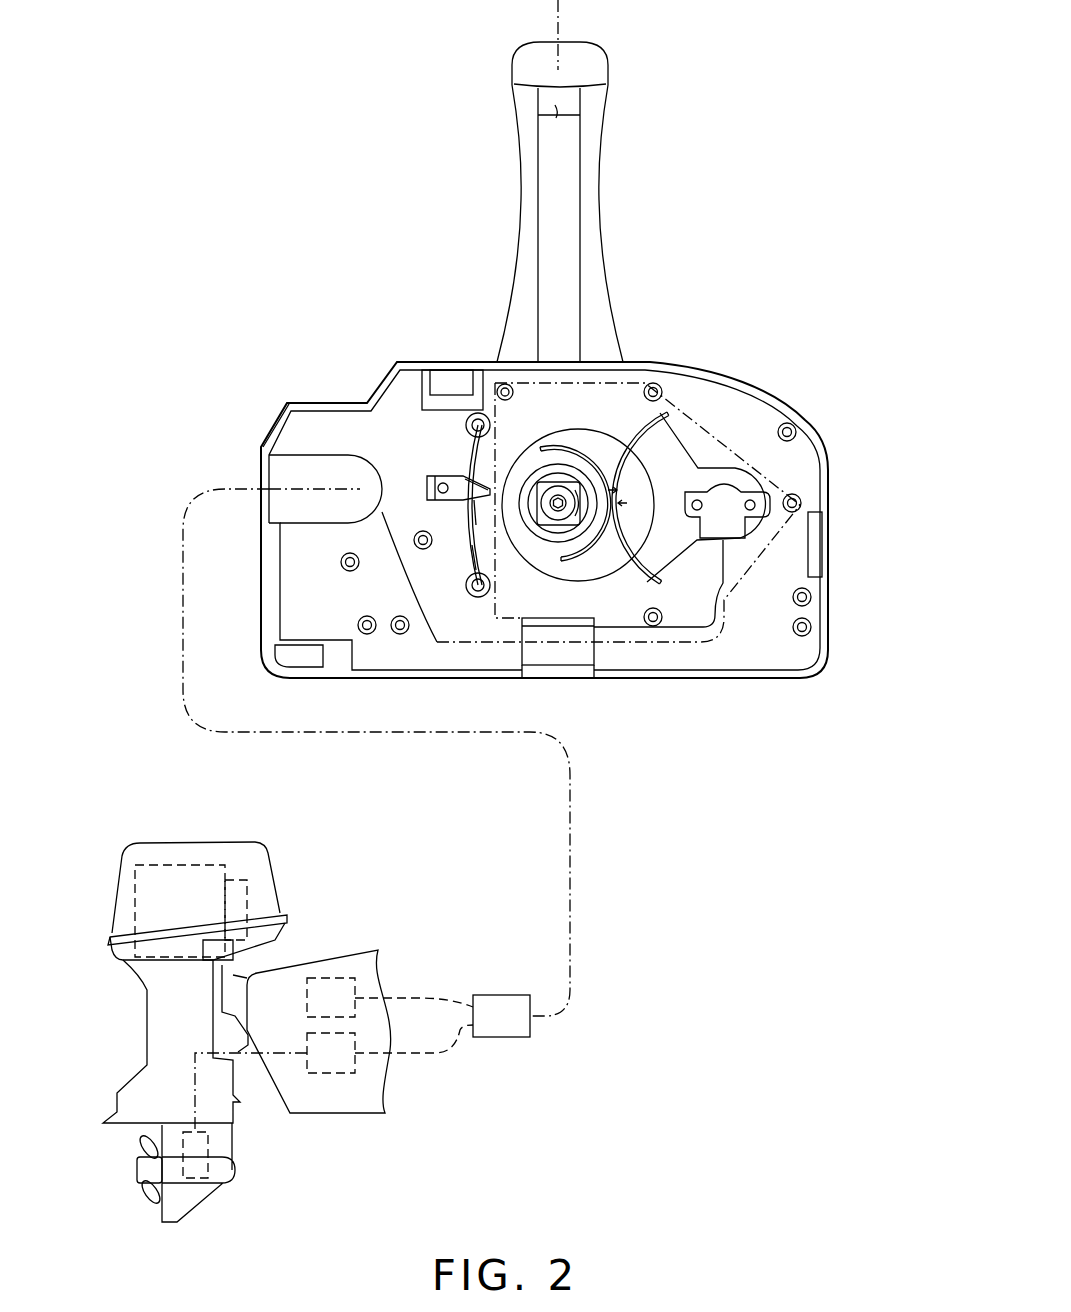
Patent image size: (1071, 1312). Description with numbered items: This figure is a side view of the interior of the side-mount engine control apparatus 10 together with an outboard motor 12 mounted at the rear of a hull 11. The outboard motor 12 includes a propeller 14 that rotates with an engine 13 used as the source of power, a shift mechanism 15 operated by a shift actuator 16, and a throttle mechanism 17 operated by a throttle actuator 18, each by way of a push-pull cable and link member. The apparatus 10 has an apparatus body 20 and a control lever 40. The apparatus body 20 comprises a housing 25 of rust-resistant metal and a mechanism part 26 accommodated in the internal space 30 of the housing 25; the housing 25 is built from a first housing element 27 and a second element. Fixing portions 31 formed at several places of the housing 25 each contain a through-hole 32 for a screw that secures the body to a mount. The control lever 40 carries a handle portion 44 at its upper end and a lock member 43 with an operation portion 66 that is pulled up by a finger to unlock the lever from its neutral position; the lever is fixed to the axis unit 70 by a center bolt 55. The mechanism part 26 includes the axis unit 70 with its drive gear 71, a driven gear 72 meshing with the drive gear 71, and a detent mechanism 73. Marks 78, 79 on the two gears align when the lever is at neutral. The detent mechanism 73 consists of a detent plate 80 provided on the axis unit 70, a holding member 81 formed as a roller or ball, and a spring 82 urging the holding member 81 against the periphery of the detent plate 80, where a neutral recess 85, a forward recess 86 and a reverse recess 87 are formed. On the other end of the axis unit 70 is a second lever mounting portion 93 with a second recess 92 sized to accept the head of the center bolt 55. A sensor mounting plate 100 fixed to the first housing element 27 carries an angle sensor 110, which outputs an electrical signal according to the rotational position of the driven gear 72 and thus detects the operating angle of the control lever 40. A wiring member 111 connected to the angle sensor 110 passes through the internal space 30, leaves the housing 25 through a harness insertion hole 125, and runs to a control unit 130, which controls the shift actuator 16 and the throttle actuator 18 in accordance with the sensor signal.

The engine control apparatus 10 is at (792, 292).
The hull 11 is at (370, 948).
The outboard motor 12 is at (258, 838).
The engine 13 is at (172, 870).
The propeller 14 is at (140, 1194).
The shift mechanism 15 is at (200, 1185).
The shift actuator 16 is at (323, 1072).
The throttle mechanism 17 is at (250, 888).
The throttle actuator 18 is at (330, 978).
The apparatus body 20 is at (330, 395).
The housing 25 is at (828, 478).
The mechanism part 26 is at (622, 648).
The first housing element 27 is at (266, 432).
The internal space 30 is at (735, 632).
The fixing portion 31 is at (421, 532).
The through-hole 32 is at (414, 543).
The control lever 40 is at (518, 202).
The lock member 43 is at (562, 272).
The handle portion 44 is at (598, 63).
The center bolt 55 is at (568, 518).
The operation portion 66 is at (560, 112).
The axis unit 70 is at (607, 430).
The drive gear 71 is at (580, 448).
The driven gear 72 is at (675, 410).
The detent mechanism 73 is at (459, 437).
The mark 78 is at (618, 492).
The mark 79 is at (625, 500).
The detent plate 80 is at (545, 437).
The holding member 81 is at (463, 475).
The spring 82 is at (462, 523).
The neutral recess 85 is at (490, 492).
The forward recess 86 is at (467, 557).
The reverse recess 87 is at (505, 453).
The second recess 92 is at (577, 515).
The second lever mounting portion 93 is at (548, 533).
The sensor mounting plate 100 is at (730, 447).
The angle sensor 110 is at (730, 527).
The wiring member 111 is at (575, 800).
The harness insertion hole 125 is at (262, 478).
The control unit 130 is at (502, 1034).